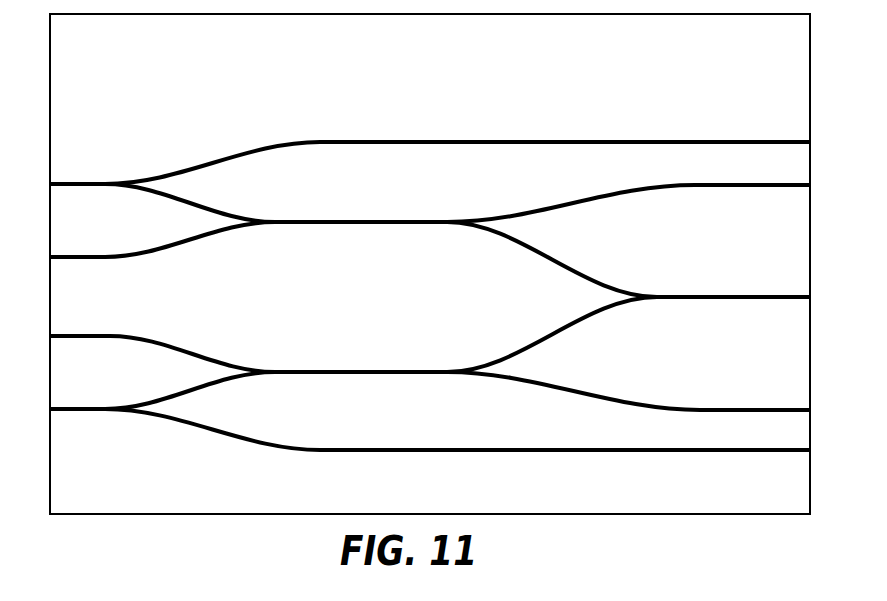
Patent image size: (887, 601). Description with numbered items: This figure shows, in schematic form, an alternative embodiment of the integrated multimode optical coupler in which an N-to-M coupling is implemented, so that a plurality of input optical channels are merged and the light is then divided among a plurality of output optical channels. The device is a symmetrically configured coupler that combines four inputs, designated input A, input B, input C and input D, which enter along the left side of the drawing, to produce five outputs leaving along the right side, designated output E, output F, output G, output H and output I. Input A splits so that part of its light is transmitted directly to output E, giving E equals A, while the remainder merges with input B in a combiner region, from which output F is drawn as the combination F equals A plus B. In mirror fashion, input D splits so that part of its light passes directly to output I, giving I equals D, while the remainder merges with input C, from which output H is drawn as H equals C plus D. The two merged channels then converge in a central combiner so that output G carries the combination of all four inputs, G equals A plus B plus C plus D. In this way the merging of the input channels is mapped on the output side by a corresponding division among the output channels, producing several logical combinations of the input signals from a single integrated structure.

The input A is at (234, 182).
The input B is at (148, 246).
The input C is at (234, 348).
The input D is at (148, 397).
The output E is at (580, 143).
The output F is at (644, 198).
The output G is at (645, 297).
The output H is at (645, 397).
The output I is at (471, 437).